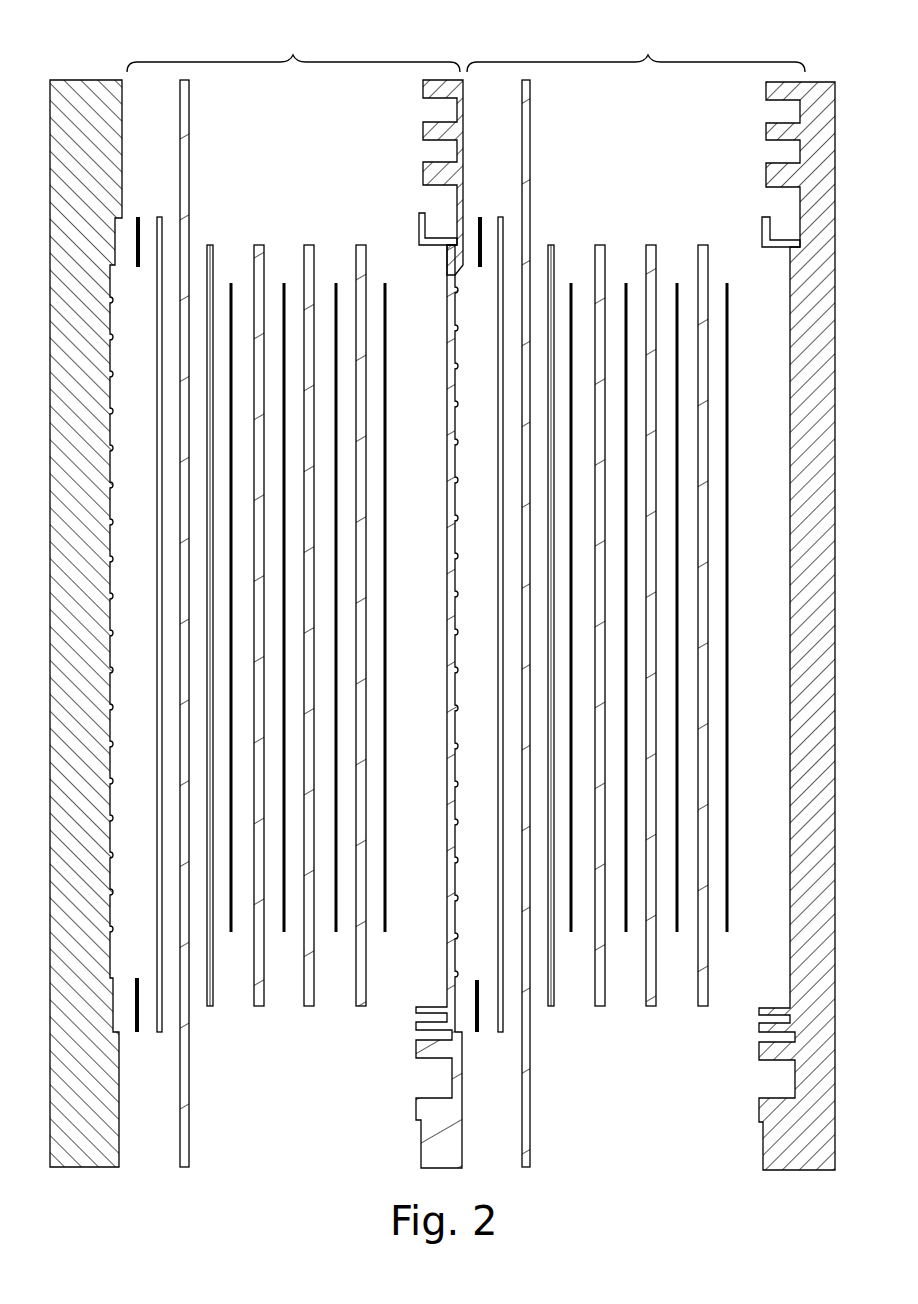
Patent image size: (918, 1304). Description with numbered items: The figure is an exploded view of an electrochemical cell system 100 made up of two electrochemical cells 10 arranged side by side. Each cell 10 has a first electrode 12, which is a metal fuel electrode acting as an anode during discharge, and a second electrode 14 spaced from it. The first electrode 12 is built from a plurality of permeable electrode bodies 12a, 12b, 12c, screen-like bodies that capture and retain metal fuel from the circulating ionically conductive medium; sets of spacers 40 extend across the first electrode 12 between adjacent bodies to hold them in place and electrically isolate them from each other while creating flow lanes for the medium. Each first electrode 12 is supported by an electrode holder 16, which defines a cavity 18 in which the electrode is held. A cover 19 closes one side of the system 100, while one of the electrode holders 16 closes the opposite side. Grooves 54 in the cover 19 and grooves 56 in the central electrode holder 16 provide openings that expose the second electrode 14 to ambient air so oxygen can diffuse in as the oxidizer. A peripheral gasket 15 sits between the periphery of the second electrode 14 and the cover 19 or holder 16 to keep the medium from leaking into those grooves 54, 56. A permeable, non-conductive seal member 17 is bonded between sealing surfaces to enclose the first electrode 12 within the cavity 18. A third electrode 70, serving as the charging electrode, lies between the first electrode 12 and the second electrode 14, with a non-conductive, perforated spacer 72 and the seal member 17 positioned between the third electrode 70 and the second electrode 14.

The electrochemical cell system 100 is at (88, 60).
The electrochemical cell 10 is at (466, 51).
The cover 19 is at (106, 120).
The seal member 17 is at (189, 160).
The peripheral gasket 15 is at (140, 245).
The second electrode 14 is at (158, 314).
The spacer 72 is at (213, 268).
The spacers 40 is at (259, 245).
The cavity 18 is at (422, 277).
The electrode holder 16 is at (428, 88).
The grooves 54 is at (118, 404).
The grooves 56 is at (455, 543).
The first electrode 12 is at (741, 660).
The permeable electrode body 12a is at (386, 918).
The permeable electrode body 12b is at (336, 920).
The permeable electrode body 12c is at (284, 920).
The third electrode 70 is at (231, 905).